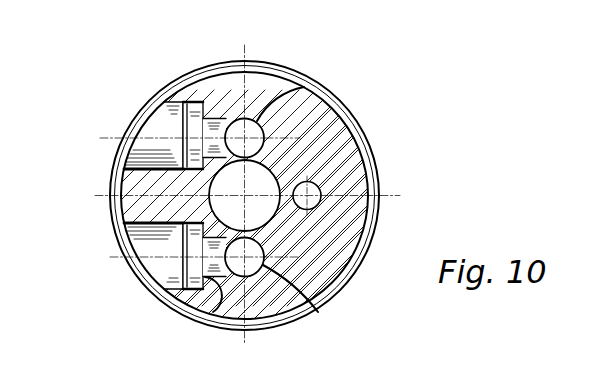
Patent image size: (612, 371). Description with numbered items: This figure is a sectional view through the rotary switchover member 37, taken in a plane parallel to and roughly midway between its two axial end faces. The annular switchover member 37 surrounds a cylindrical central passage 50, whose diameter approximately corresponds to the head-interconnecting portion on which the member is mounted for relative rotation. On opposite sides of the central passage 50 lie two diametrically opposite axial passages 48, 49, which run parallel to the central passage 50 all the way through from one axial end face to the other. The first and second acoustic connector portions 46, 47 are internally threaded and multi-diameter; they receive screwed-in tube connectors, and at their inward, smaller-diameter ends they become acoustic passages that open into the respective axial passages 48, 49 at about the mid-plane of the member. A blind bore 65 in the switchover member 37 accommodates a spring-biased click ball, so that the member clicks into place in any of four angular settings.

The rotary switchover member 37 is at (122, 90).
The first acoustic connector portion 46 is at (214, 117).
The second acoustic connector portion 47 is at (193, 318).
The axial passage 48 is at (302, 86).
The axial passage 49 is at (318, 311).
The central passage 50 is at (273, 219).
The blind bore 65 is at (322, 189).